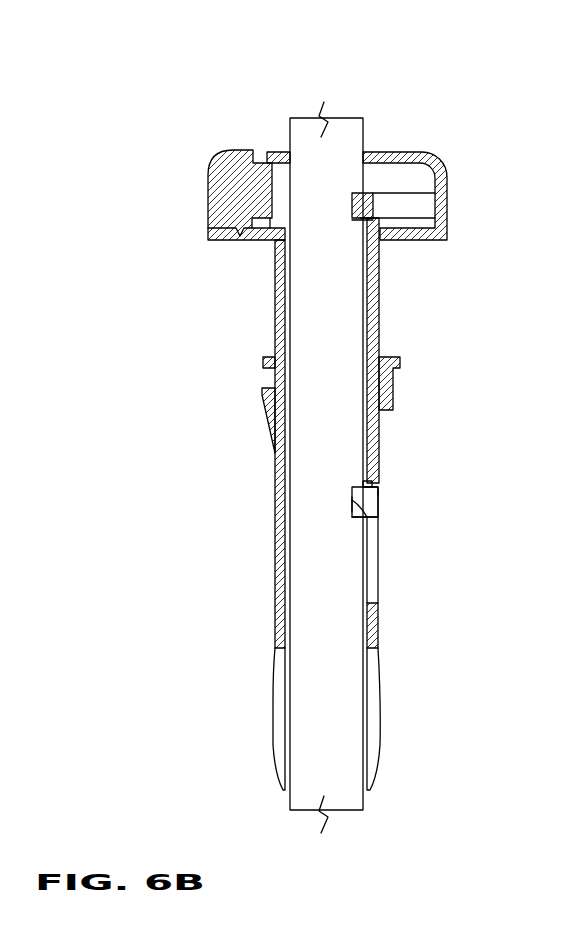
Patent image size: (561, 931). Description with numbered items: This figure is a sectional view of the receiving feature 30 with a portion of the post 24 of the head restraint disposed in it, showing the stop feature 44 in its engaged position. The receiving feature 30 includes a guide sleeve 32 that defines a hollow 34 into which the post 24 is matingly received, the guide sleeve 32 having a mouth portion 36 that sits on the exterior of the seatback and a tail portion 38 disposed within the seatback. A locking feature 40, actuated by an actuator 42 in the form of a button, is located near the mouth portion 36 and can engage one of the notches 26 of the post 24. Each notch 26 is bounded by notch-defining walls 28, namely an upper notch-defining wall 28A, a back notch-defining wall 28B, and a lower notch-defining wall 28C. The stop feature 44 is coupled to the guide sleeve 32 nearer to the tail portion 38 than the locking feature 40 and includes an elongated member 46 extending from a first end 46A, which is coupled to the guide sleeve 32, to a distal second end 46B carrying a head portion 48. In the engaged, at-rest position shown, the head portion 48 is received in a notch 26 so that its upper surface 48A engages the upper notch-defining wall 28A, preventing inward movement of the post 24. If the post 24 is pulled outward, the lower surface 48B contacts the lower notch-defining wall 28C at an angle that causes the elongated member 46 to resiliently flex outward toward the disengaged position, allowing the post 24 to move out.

The post 24 is at (341, 148).
The notch 26 is at (352, 221).
The notch-defining wall 28 is at (227, 428).
The upper notch-defining wall 28A is at (268, 420).
The back notch-defining wall 28B is at (352, 503).
The lower notch-defining wall 28C is at (358, 518).
The receiving feature 30 is at (422, 152).
The guide sleeve 32 is at (379, 277).
The hollow 34 is at (379, 338).
The mouth portion 36 is at (283, 148).
The tail portion 38 is at (368, 790).
The locking feature 40 is at (375, 195).
The actuator 42 is at (208, 188).
The stop feature 44 is at (381, 530).
The elongated member 46 is at (379, 563).
The first end 46A is at (379, 593).
The second end 46B is at (380, 493).
The head portion 48 is at (352, 490).
The upper surface 48A is at (375, 485).
The lower surface 48B is at (355, 516).